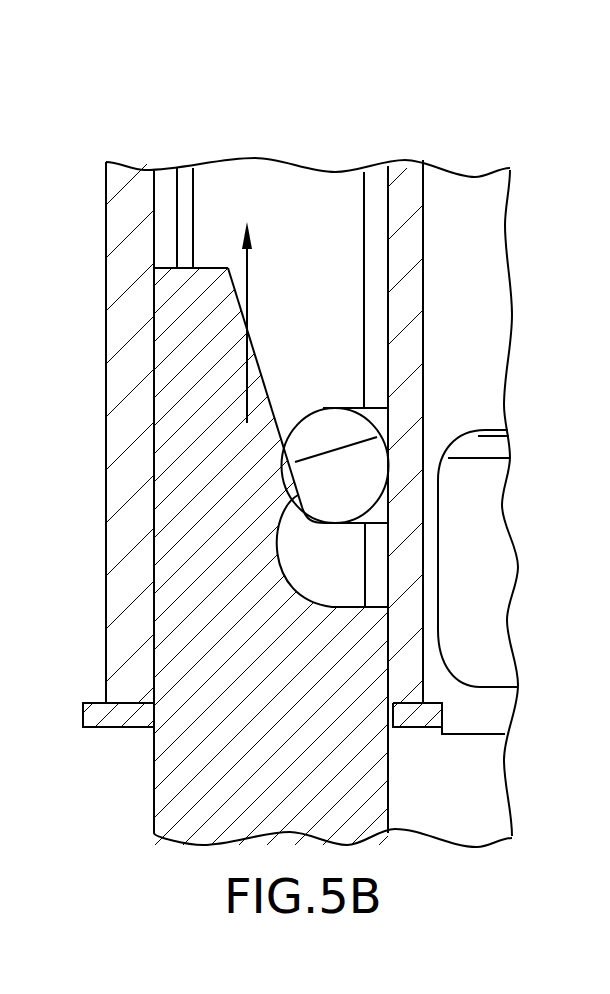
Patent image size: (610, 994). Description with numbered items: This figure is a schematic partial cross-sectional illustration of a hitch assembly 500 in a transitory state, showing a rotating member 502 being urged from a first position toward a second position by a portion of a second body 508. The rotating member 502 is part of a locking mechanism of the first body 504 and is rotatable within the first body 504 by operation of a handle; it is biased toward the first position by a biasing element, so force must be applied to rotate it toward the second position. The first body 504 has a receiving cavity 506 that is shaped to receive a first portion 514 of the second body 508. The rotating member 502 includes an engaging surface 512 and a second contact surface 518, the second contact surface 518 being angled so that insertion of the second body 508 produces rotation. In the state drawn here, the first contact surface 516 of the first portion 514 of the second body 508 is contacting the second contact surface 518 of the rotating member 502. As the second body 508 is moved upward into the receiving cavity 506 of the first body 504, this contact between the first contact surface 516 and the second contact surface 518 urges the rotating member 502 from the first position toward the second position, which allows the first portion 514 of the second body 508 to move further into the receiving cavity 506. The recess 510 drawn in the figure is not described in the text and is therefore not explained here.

The hitch assembly 500 is at (198, 143).
The rotating member 502 is at (367, 466).
The first body 504 is at (410, 285).
The receiving cavity 506 is at (333, 222).
The second body 508 is at (165, 749).
The recess pocket 510 is at (307, 558).
The engaging surface 512 is at (336, 398).
The first portion 514 is at (175, 372).
The first contact surface 516 is at (272, 398).
The second contact surface 518 is at (315, 503).